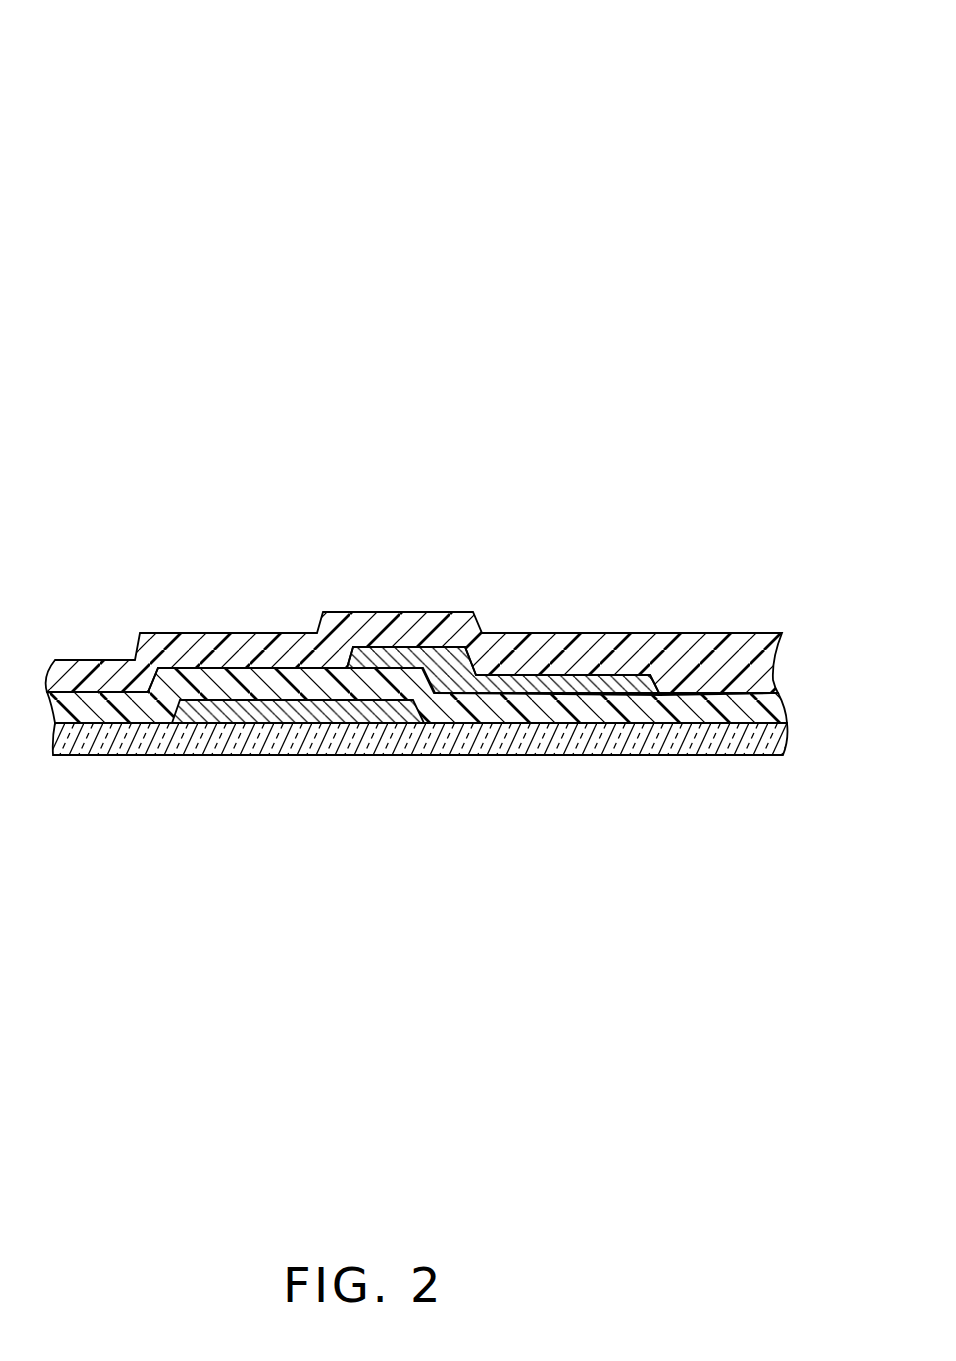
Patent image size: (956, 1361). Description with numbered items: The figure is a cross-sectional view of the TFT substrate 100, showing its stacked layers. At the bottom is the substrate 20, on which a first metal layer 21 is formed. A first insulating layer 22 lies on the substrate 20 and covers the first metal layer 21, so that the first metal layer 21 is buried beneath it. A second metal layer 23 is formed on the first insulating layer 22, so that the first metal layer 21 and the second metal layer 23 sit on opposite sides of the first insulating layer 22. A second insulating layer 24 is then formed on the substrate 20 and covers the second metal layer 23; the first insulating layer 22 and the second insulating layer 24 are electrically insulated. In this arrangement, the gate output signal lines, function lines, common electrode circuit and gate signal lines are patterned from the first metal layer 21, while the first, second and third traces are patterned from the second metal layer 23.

The TFT substrate 100 is at (430, 46).
The substrate 20 is at (733, 743).
The first metal layer 21 is at (320, 712).
The first insulating layer 22 is at (772, 707).
The second metal layer 23 is at (447, 661).
The second insulating layer 24 is at (371, 627).